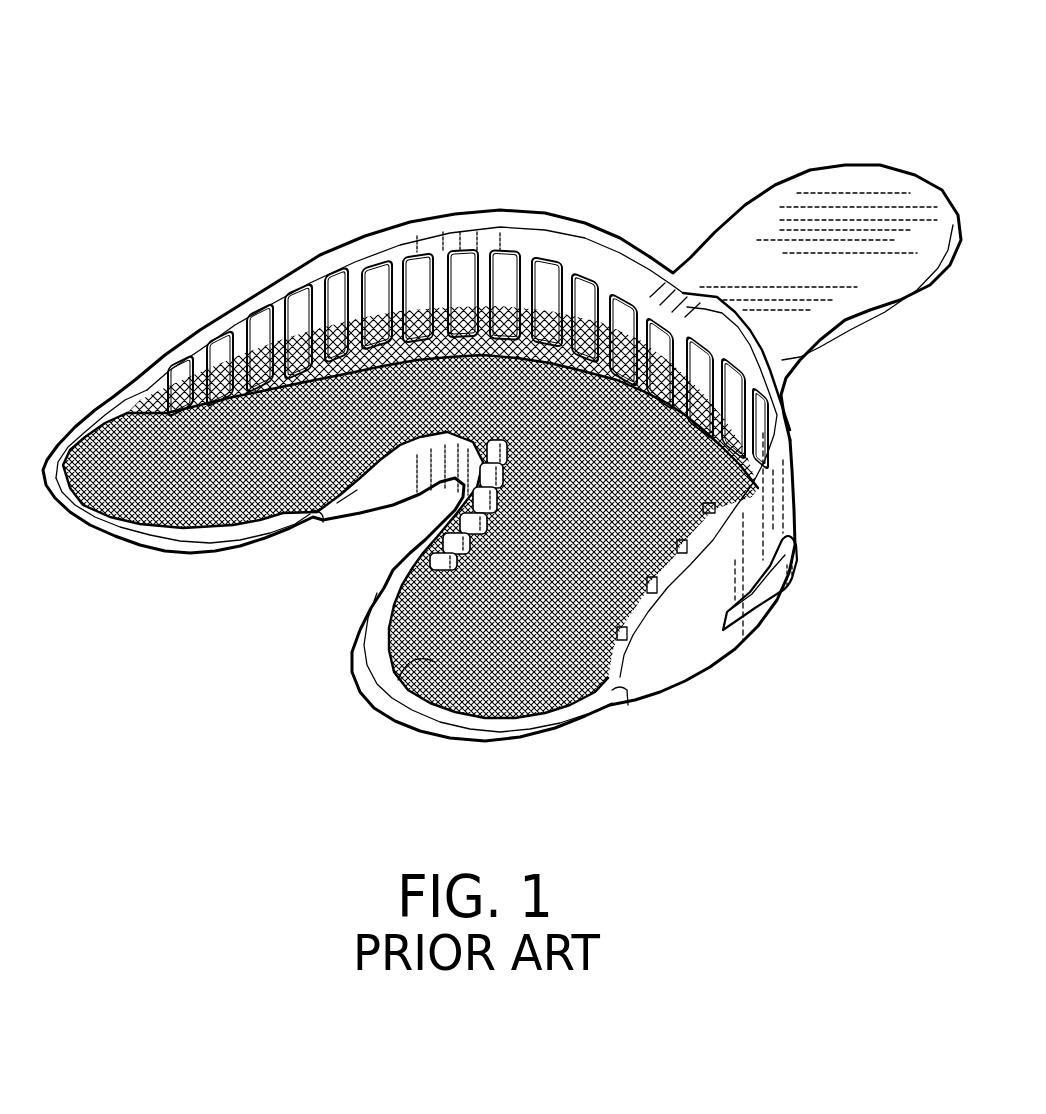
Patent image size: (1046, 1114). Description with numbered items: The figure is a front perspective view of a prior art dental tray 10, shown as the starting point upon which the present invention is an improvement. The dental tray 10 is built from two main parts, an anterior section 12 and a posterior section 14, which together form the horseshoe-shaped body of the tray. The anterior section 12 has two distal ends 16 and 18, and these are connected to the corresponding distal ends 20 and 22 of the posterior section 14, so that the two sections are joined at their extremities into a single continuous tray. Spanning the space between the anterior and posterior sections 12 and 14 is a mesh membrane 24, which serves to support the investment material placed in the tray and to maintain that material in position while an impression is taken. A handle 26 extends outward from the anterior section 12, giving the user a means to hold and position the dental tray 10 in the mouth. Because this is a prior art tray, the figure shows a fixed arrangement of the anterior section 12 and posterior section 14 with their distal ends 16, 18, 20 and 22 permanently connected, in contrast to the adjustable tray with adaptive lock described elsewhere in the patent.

The dental tray 10 is at (232, 150).
The anterior section 12 is at (773, 500).
The posterior section 14 is at (153, 543).
The distal end 16 is at (147, 370).
The distal end 18 is at (643, 660).
The distal end 20 is at (117, 400).
The distal end 22 is at (622, 698).
The mesh membrane 24 is at (376, 640).
The handle 26 is at (753, 260).